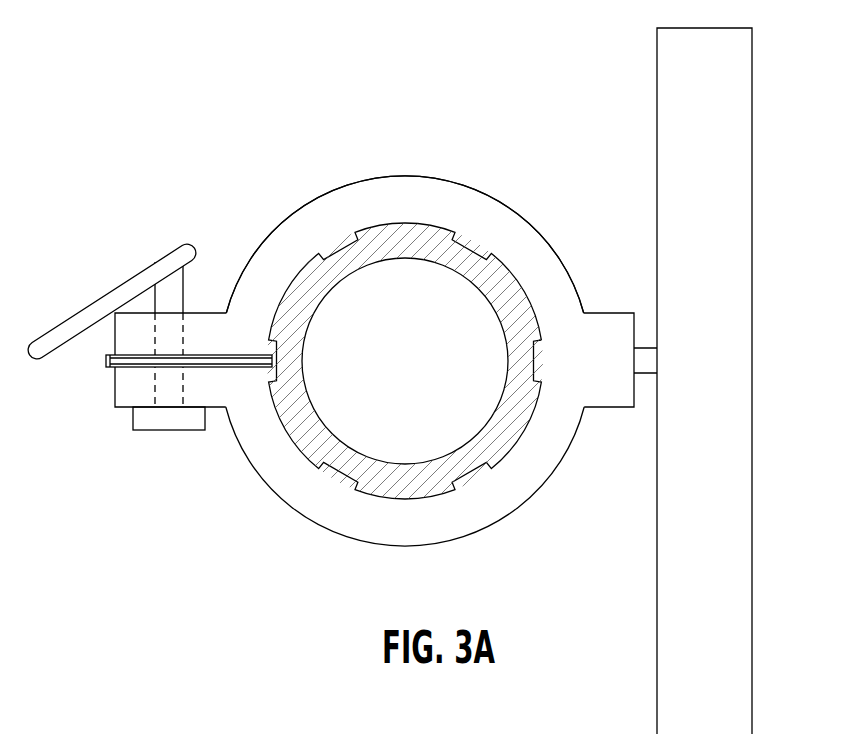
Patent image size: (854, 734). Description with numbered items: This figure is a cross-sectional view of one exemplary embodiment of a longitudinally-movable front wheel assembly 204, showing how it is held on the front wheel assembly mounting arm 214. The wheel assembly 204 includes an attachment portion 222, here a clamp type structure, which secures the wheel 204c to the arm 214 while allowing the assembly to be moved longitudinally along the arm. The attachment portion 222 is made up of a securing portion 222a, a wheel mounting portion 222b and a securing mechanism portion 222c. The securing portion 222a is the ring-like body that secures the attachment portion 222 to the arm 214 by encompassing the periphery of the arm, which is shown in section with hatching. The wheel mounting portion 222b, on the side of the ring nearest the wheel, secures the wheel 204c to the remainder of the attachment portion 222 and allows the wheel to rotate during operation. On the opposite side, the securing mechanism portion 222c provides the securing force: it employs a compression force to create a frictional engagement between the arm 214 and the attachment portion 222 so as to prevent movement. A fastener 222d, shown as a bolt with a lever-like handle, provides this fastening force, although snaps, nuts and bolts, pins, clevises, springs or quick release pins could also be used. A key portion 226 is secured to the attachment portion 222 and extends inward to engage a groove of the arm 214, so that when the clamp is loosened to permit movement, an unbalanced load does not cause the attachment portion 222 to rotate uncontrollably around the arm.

The front wheel assembly 204 is at (298, 195).
The wheel 204c is at (727, 53).
The front wheel assembly mounting arm 214 is at (415, 222).
The attachment portion 222 is at (381, 351).
The securing portion 222a is at (387, 522).
The wheel mounting portion 222b is at (607, 407).
The securing mechanism portion 222c is at (117, 400).
The fastener 222d is at (127, 293).
The key portion 226 is at (106, 360).